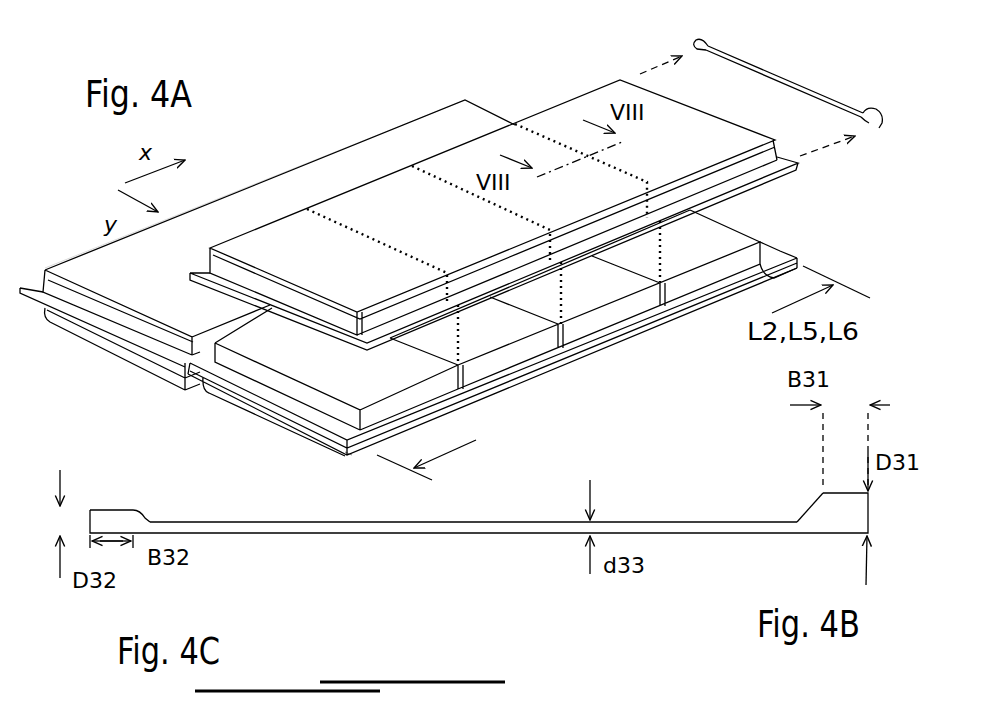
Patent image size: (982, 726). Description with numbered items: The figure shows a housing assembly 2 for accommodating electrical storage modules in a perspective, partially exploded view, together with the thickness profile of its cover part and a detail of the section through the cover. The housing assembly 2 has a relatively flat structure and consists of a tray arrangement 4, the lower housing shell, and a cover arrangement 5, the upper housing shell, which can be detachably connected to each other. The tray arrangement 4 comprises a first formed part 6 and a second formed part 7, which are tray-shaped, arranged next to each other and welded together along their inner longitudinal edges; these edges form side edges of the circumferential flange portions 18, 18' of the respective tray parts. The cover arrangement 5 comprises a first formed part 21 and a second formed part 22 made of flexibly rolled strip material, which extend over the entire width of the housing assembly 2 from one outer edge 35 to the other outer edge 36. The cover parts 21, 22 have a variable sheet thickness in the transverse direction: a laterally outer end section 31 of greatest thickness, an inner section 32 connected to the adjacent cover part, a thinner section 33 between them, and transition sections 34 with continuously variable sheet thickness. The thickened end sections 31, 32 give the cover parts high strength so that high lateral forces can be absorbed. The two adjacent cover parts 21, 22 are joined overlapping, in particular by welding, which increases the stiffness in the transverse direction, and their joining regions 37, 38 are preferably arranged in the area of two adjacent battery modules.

In FIG. 4A, the housing assembly 2 is at (313, 76).
In FIG. 4A, the tray arrangement 4 is at (147, 393).
In FIG. 4A, the cover arrangement 5 is at (258, 196).
In FIG. 4A, the first formed part 6 is at (272, 431).
In FIG. 4A, the second formed part 7 is at (105, 351).
In FIG. 4A, the circumferential flange portion 18 is at (575, 299).
In FIG. 4A, the circumferential flange portion 18' is at (234, 369).
In FIG. 4A, the first formed part (cover part) 21 is at (623, 85).
In FIG. 4C, the first formed part (cover part) 21 is at (449, 680).
In FIG. 4A, the second formed part (cover part) 22 is at (487, 150).
In FIG. 4C, the second formed part (cover part) 22 is at (284, 688).
In FIG. 4B, the laterally outer end section 31 is at (837, 493).
In FIG. 4B, the inner section 32 is at (118, 510).
In FIG. 4B, the thinner section 33 is at (490, 520).
In FIG. 4B, the transition section 34 is at (807, 508).
In FIG. 4A, the outer edge 35 is at (756, 183).
In FIG. 4A, the outer edge 36 is at (30, 290).
In FIG. 4A, the joining region 37 is at (548, 135).
In FIG. 4A, the joining region 38 is at (442, 183).